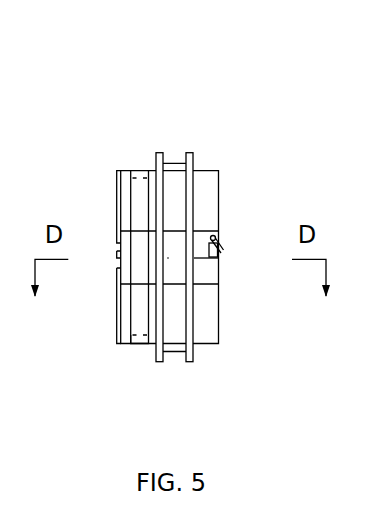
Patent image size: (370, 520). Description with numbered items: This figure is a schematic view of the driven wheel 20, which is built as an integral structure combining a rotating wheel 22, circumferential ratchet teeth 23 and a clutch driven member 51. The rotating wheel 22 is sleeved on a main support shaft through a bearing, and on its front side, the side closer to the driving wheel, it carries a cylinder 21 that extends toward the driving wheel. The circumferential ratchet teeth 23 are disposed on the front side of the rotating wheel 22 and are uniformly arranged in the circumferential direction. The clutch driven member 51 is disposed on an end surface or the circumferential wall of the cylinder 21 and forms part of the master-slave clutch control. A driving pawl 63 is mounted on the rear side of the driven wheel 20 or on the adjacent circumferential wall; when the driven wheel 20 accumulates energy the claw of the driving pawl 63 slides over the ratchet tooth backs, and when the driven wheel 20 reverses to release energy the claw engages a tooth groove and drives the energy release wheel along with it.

The driven wheel 20 is at (165, 107).
The cylinder 21 is at (125, 171).
The clutch driven member 51 is at (113, 187).
The rotating wheel 22 is at (177, 220).
The driving pawl 63 is at (220, 255).
The circumferential ratchet teeth 23 is at (134, 346).